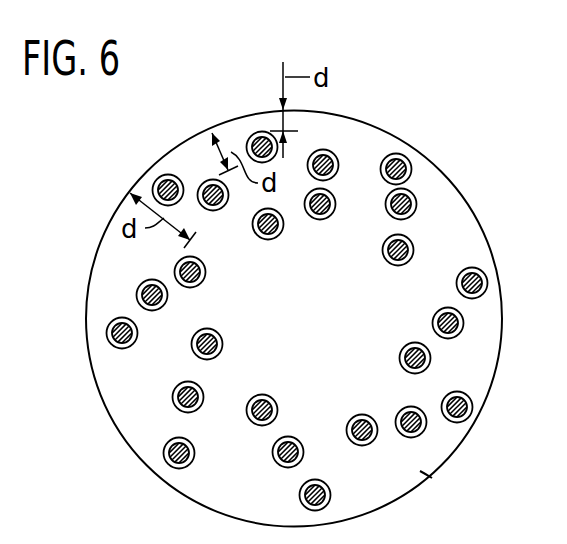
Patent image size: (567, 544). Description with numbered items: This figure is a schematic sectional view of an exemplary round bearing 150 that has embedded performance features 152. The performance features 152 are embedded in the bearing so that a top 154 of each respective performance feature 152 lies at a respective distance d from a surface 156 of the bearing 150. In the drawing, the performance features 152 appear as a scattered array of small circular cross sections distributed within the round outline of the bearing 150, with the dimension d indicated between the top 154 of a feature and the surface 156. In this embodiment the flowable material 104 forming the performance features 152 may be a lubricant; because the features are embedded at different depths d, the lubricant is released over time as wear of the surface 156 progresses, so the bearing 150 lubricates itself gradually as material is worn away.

The round bearing 150 is at (374, 101).
The performance features 152 is at (272, 239).
The top 154 is at (257, 133).
The flowable material 104 is at (462, 289).
The surface 156 is at (430, 479).